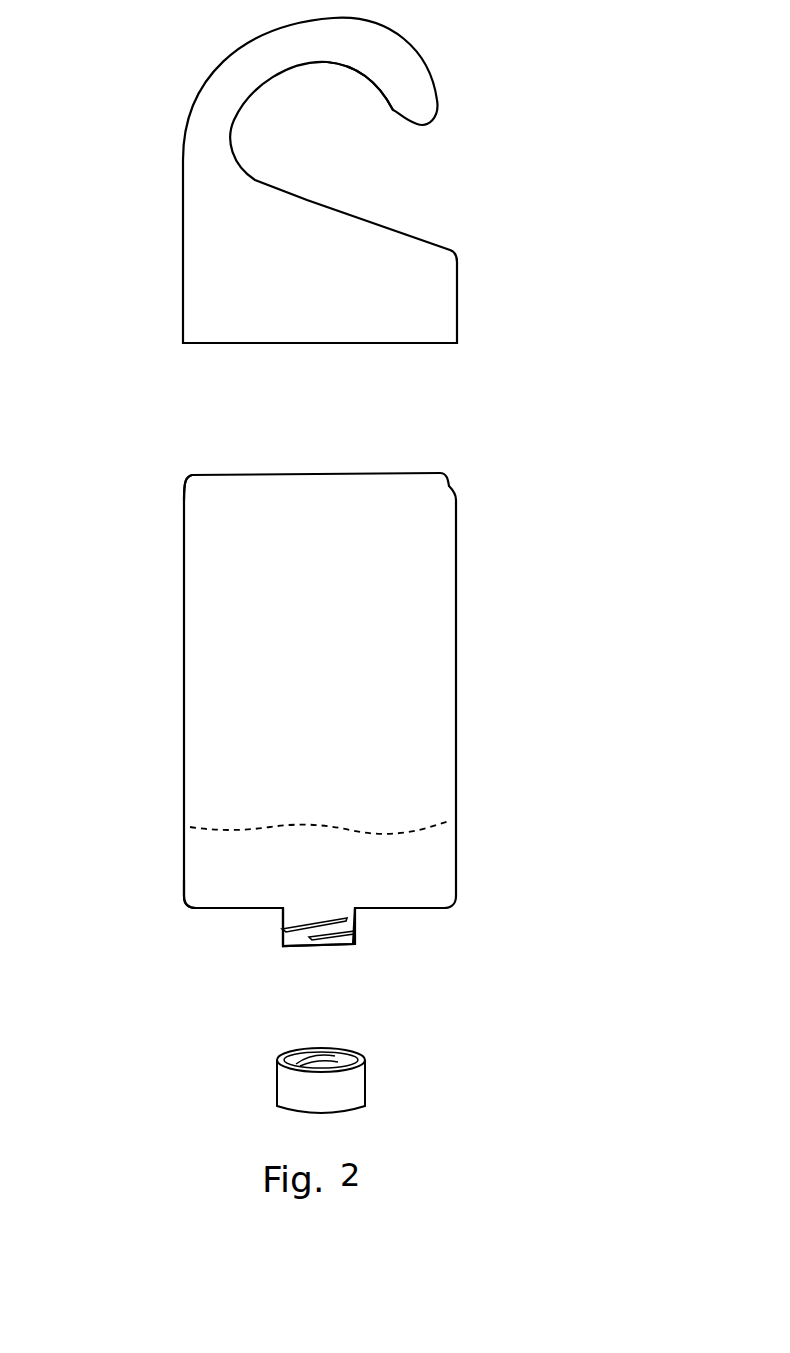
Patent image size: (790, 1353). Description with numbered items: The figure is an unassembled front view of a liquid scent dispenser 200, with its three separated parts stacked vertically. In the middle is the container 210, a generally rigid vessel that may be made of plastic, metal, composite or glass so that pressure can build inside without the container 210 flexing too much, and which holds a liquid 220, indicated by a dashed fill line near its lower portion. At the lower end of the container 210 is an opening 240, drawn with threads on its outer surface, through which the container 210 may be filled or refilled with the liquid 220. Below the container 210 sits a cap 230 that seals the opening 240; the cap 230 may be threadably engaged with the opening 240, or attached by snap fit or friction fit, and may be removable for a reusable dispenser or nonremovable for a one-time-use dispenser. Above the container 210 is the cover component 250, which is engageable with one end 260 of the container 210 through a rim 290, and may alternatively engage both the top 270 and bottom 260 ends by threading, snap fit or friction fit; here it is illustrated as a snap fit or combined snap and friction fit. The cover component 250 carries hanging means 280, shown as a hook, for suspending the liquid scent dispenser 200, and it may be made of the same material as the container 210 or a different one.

The liquid scent dispenser 200 is at (596, 235).
The container 210 is at (457, 695).
The liquid 220 is at (438, 865).
The cap 230 is at (365, 1083).
The opening 240 is at (355, 925).
The cover component 250 is at (183, 268).
The end of the container 260 is at (184, 490).
The top end 270 is at (185, 908).
The hanging means 280 is at (326, 64).
The rim 290 is at (435, 343).